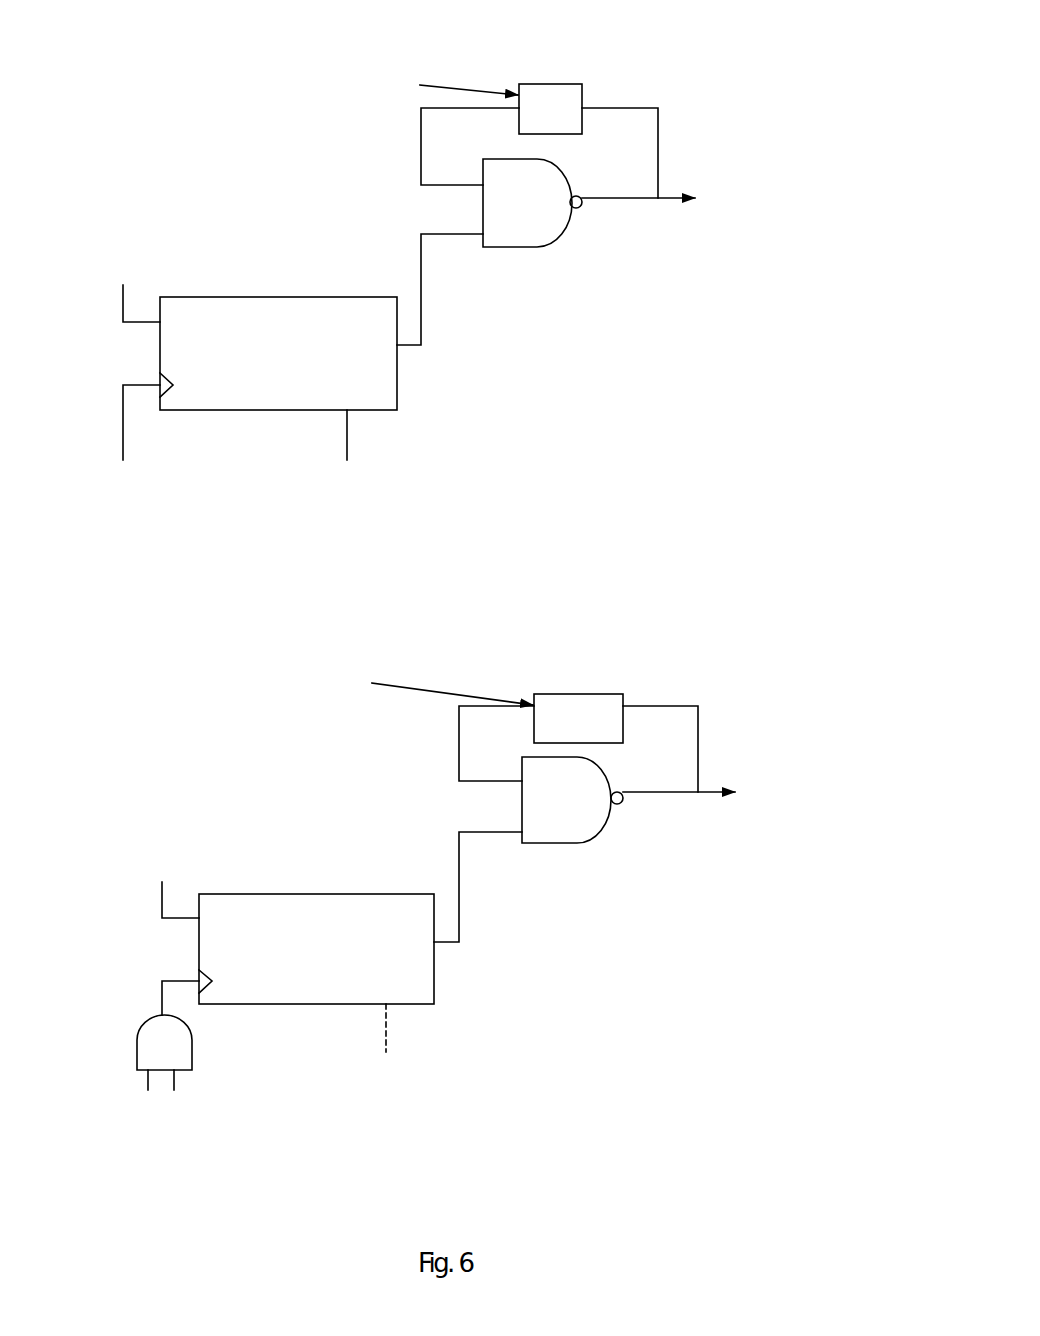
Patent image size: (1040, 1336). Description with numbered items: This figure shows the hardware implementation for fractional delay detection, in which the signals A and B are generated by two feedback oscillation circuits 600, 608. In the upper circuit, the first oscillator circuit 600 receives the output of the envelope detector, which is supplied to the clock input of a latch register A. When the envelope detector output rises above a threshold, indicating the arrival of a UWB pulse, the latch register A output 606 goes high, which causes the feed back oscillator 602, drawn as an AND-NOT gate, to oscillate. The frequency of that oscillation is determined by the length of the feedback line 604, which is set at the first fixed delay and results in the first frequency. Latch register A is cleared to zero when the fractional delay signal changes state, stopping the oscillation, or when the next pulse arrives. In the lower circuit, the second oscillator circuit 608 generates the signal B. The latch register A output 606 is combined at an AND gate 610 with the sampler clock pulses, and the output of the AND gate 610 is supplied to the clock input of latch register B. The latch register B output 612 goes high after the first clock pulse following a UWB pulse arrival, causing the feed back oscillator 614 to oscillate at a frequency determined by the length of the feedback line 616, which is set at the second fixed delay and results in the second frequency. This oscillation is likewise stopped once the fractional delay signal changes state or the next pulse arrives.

The first oscillator circuit 600 is at (752, 72).
The feed back oscillator 602 is at (560, 236).
The feedback line 604 is at (560, 84).
The latch register A output 606 is at (421, 325).
The second oscillator circuit 608 is at (750, 642).
The AND gate 610 is at (192, 1052).
The latch register B output 612 is at (459, 902).
The feed back oscillator 614 is at (602, 826).
The feedback line 616 is at (598, 693).